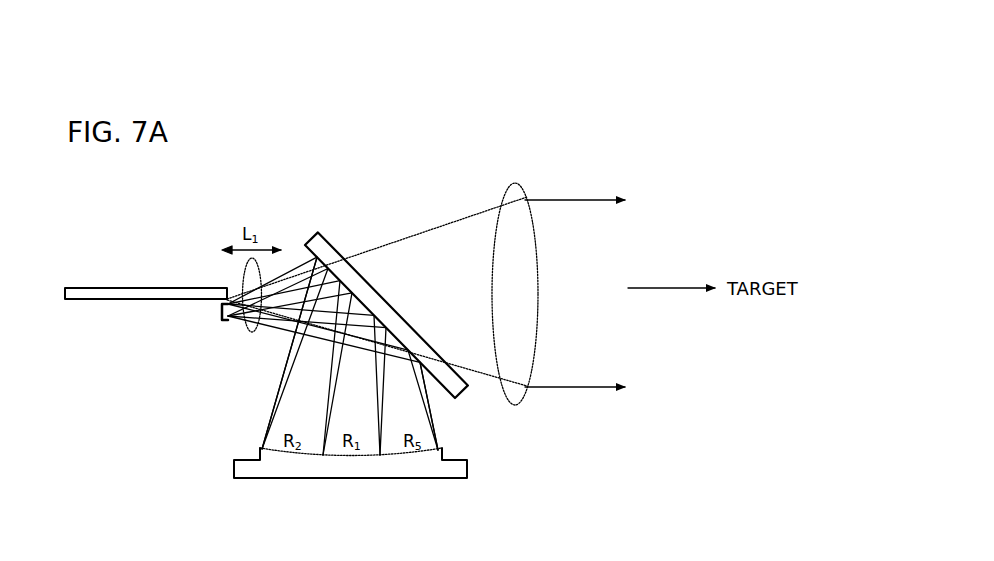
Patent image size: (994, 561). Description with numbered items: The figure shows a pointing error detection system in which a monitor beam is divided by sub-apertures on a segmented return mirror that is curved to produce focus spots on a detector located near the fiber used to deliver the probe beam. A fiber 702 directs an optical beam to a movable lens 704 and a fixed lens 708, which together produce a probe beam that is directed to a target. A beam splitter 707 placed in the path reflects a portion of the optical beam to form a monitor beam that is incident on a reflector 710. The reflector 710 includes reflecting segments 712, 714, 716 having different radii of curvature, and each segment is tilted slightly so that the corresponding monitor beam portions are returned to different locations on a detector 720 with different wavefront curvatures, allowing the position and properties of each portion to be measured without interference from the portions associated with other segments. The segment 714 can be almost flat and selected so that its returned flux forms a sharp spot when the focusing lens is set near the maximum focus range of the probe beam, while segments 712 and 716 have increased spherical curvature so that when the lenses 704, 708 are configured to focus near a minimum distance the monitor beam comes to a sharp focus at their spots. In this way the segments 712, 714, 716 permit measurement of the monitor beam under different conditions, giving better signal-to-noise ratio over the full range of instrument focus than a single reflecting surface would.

The fiber 702 is at (117, 288).
The movable lens 704 is at (243, 272).
The beam splitter 707 is at (320, 233).
The fixed lens 708 is at (519, 183).
The reflector 710 is at (350, 488).
The reflecting segment 712 is at (282, 413).
The reflecting segment 714 is at (334, 448).
The reflecting segment 716 is at (432, 447).
The detector 720 is at (222, 312).